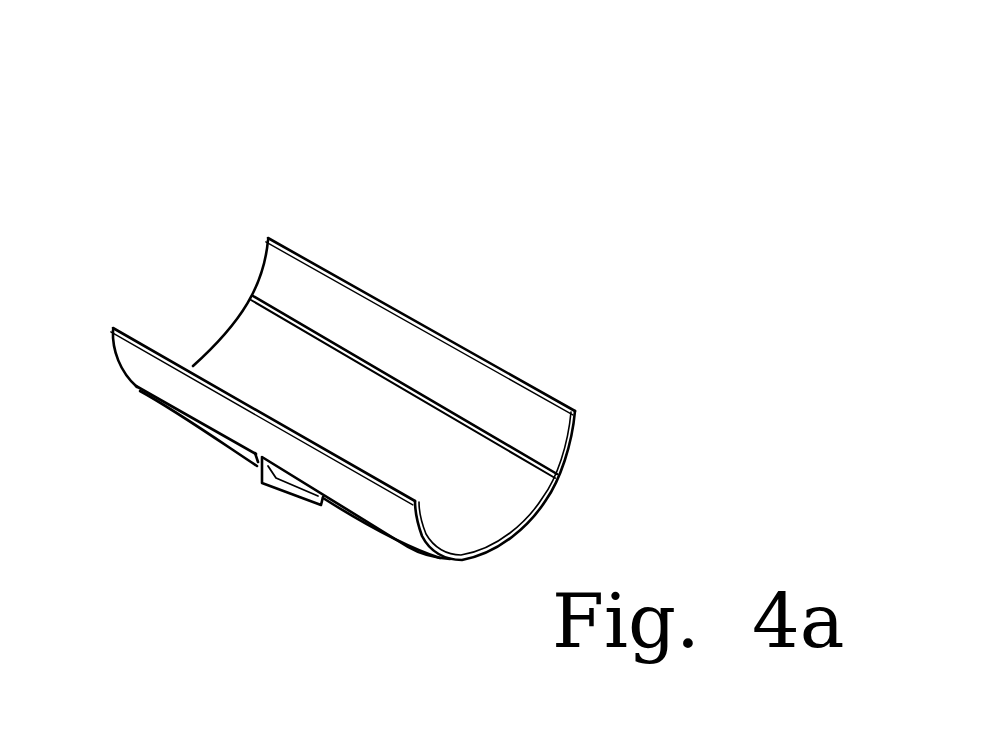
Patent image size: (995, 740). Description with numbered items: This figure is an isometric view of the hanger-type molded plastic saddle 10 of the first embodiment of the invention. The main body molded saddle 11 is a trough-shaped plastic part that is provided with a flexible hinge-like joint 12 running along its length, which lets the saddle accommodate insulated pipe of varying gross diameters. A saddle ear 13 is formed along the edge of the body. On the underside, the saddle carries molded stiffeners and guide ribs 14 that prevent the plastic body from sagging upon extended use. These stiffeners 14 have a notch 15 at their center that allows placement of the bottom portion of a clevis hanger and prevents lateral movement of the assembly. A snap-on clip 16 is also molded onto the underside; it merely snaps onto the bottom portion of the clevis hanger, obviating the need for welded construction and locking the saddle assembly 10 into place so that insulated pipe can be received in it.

The hanger-type saddle assembly 10 is at (515, 138).
The main body molded saddle 11 is at (264, 474).
The flexible hinge-like joint 12 is at (356, 331).
The saddle ear 13 is at (478, 352).
The stiffeners and guide ribs 14 is at (406, 549).
The notch 15 is at (255, 467).
The snap-on clip 16 is at (291, 500).